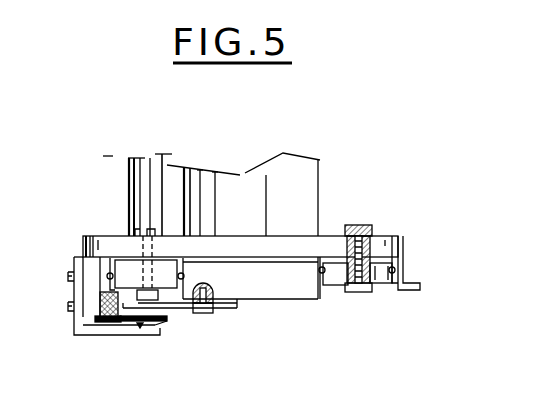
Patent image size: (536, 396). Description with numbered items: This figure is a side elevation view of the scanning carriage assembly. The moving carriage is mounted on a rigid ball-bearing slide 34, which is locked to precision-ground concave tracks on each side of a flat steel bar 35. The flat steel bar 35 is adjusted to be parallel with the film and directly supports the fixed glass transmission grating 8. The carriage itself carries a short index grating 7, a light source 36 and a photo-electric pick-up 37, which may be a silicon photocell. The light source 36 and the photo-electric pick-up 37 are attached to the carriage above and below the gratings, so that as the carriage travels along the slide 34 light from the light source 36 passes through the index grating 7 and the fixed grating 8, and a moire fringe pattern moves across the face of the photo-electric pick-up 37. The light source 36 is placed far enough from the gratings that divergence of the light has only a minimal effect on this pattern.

The light source 36 is at (142, 188).
The photo-electric pick-up 37 is at (137, 328).
The index grating 7 is at (163, 327).
The glass transmission grating 8 is at (183, 311).
The flat steel bar 35 is at (303, 293).
The ball-bearing slide 34 is at (338, 278).